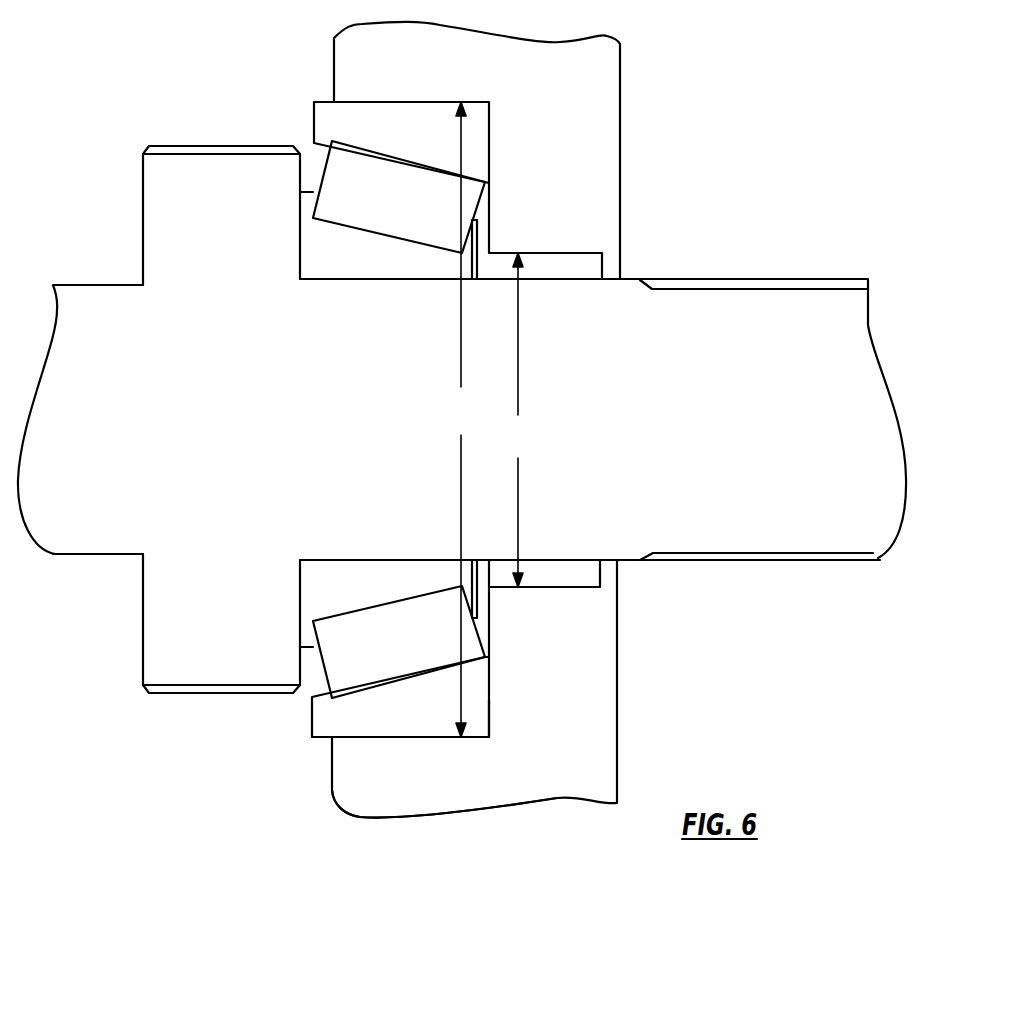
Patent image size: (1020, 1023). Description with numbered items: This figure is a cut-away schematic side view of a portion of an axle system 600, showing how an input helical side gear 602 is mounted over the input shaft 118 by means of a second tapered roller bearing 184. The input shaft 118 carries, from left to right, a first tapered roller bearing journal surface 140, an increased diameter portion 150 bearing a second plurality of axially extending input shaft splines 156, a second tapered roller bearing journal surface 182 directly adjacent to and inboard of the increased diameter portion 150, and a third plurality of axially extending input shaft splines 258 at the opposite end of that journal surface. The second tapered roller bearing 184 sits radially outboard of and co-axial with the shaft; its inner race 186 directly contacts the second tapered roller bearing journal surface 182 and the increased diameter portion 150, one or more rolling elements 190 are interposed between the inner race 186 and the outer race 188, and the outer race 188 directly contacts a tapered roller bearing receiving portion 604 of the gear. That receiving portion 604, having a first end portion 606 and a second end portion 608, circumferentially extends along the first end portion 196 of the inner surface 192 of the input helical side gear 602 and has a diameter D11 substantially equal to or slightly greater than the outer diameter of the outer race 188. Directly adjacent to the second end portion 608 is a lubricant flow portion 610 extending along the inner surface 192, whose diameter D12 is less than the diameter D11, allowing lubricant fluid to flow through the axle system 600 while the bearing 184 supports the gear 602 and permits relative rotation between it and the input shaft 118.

The input shaft 118 is at (136, 407).
The first tapered roller bearing journal surface 140 is at (95, 553).
The increased diameter portion 150 is at (212, 684).
The second plurality of axially extending input shaft splines 156 is at (153, 694).
The second tapered roller bearing journal surface 182 is at (357, 283).
The second tapered roller bearing 184 is at (320, 257).
The inner race 186 is at (371, 269).
The outer race 188 is at (423, 149).
The rolling elements 190 is at (412, 214).
The inner surface 192 is at (607, 558).
The first end portion 196 is at (342, 813).
The third plurality of axially extending input shaft splines 258 is at (805, 280).
The axle system 600 is at (818, 93).
The input helical side gear 602 is at (565, 151).
The tapered roller bearing receiving portion 604 is at (433, 740).
The first end portion 606 is at (322, 740).
The second end portion 608 is at (470, 737).
The lubricant flow portion 610 is at (553, 588).
The diameter of the tapered roller bearing receiving portion D11 is at (459, 419).
The diameter of the lubricant flow portion D12 is at (518, 420).